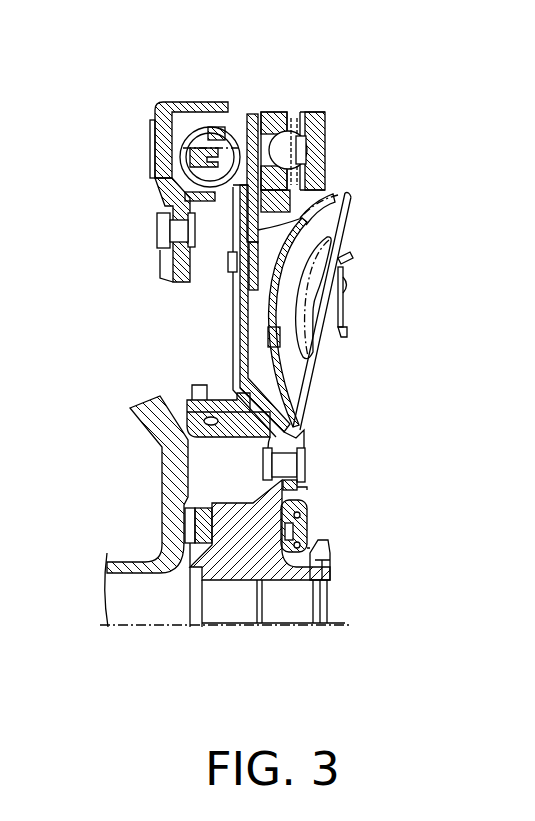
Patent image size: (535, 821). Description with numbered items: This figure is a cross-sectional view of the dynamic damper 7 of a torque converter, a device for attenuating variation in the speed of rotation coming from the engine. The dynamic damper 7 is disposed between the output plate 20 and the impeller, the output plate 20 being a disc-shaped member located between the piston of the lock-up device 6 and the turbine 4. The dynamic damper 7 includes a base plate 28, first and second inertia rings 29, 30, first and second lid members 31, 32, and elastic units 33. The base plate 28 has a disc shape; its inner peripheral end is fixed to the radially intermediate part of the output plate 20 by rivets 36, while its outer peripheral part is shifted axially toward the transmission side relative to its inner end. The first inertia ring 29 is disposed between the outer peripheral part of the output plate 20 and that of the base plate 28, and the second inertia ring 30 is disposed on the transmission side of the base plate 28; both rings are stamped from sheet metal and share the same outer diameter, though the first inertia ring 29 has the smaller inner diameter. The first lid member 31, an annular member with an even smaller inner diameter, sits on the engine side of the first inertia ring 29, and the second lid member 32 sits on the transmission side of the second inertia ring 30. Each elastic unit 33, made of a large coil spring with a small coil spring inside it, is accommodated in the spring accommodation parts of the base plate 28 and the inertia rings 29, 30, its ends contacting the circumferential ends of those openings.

The turbine 4 is at (337, 363).
The lock-up device 6 is at (140, 193).
The dynamic damper 7 is at (301, 129).
The output plate 20 is at (203, 316).
The base plate 28 is at (333, 218).
The first inertia ring 29 is at (272, 113).
The second inertia ring 30 is at (307, 114).
The first lid member 31 is at (253, 113).
The second lid member 32 is at (322, 128).
The elastic unit 33 is at (322, 148).
The rivet 36 is at (243, 330).